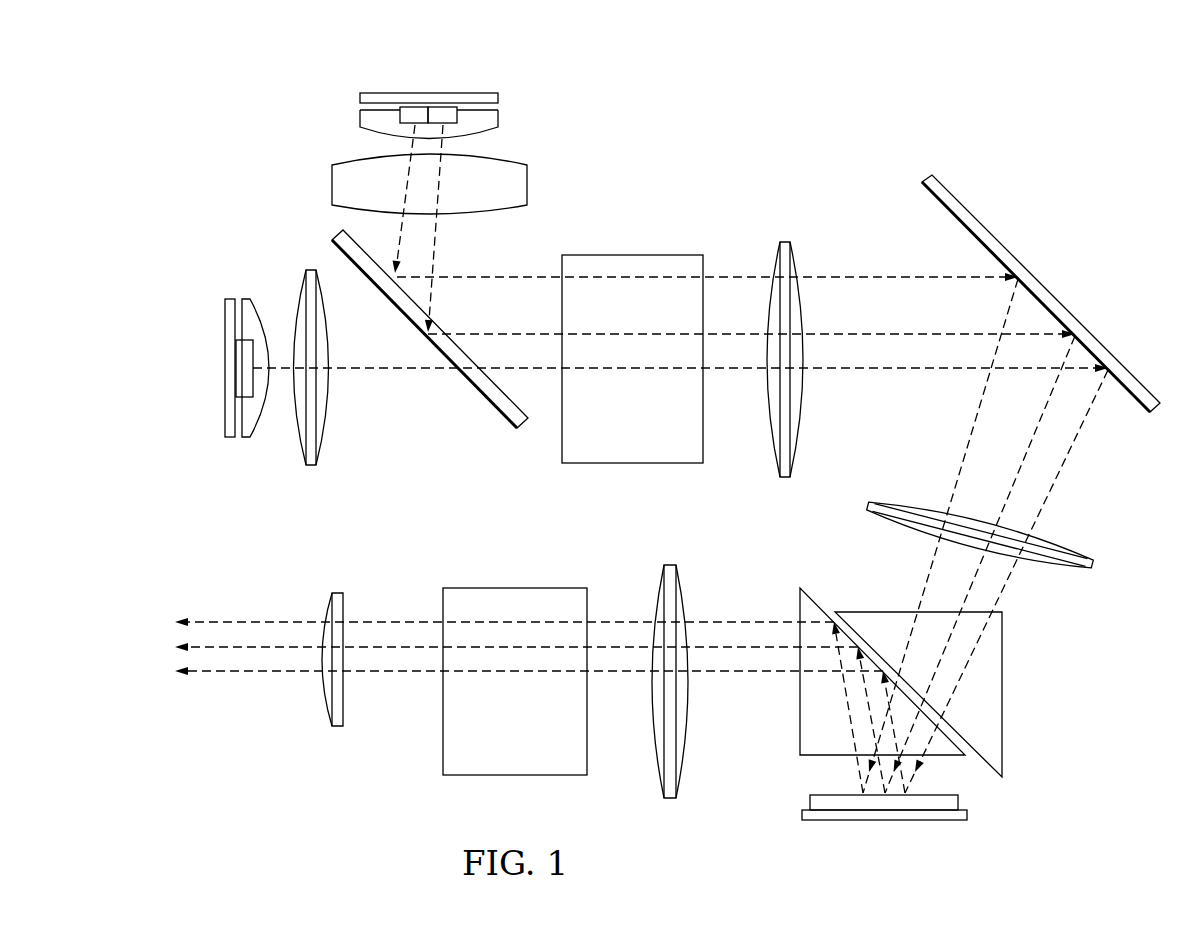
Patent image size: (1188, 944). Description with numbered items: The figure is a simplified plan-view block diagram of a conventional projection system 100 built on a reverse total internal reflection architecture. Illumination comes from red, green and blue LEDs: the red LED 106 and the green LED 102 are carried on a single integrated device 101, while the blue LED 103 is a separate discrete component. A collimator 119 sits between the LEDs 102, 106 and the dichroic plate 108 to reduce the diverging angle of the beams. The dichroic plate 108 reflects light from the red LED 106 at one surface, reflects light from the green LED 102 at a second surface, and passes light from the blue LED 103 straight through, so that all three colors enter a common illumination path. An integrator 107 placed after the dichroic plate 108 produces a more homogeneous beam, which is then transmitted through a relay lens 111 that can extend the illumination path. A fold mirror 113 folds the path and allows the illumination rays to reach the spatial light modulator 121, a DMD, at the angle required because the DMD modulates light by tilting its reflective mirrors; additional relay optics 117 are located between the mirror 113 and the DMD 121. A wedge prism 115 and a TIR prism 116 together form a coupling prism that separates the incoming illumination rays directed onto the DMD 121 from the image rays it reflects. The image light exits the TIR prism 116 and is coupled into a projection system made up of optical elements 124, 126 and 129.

The projection system 100 is at (1030, 112).
The light source unit 101 is at (360, 116).
The green LED 102 is at (447, 107).
The blue LED 103 is at (243, 358).
The red LED 106 is at (410, 107).
The integrator 107 is at (632, 255).
The dichroic plate 108 is at (475, 390).
The relay lens 111 is at (785, 242).
The fold mirror 113 is at (977, 218).
The wedge prism 115 is at (1002, 695).
The TIR prism 116 is at (800, 723).
The relay optics 117 is at (1093, 565).
The collimator 119 is at (332, 187).
The spatial light modulator 121 is at (882, 820).
The optical element 124 is at (668, 800).
The optical element 126 is at (513, 777).
The optical element 129 is at (337, 727).